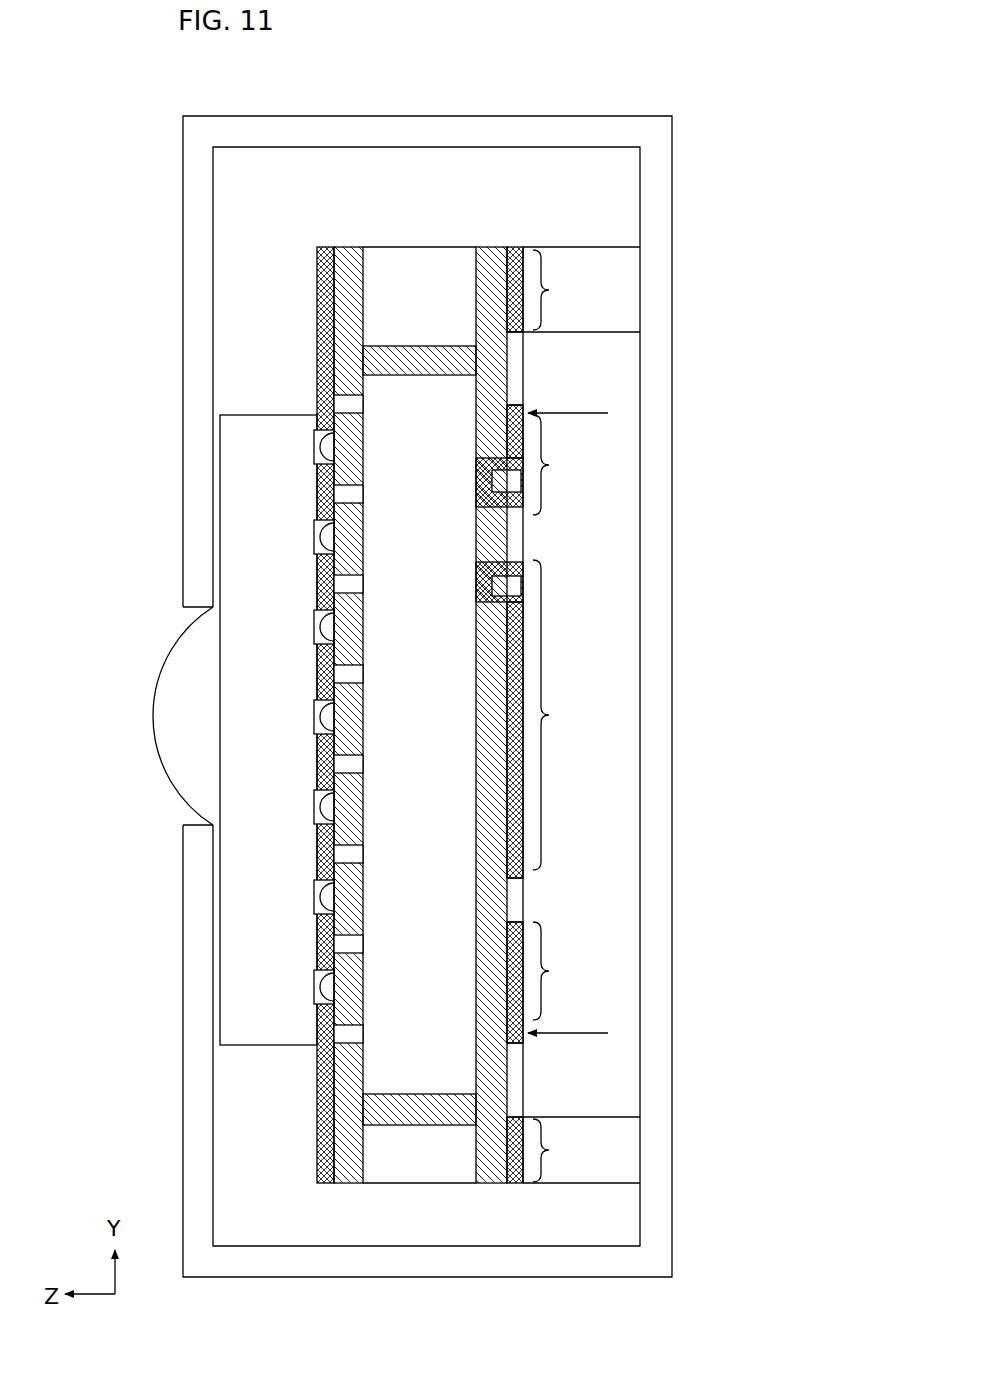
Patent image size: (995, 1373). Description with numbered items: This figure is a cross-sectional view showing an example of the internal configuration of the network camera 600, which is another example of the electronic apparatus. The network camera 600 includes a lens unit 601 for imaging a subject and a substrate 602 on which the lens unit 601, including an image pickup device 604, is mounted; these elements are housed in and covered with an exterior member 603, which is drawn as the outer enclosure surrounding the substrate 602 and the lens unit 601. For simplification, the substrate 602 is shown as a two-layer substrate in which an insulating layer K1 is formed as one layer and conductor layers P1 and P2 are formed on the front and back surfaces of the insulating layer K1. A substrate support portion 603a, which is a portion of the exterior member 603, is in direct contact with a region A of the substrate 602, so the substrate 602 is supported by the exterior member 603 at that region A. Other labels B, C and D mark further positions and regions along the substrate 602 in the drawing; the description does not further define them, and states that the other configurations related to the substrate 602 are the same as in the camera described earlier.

The network camera 600 is at (141, 132).
The lens unit 601 is at (170, 645).
The substrate 602 is at (317, 270).
The exterior member 603 is at (203, 292).
The substrate support portion 603a is at (620, 291).
The image pickup device 604 is at (245, 468).
The conductor layer P1 is at (344, 246).
The insulating layer K1 is at (419, 246).
The conductor layer P2 is at (492, 246).
The region A is at (553, 716).
The position B is at (577, 725).
The region C is at (553, 717).
The region D is at (554, 715).